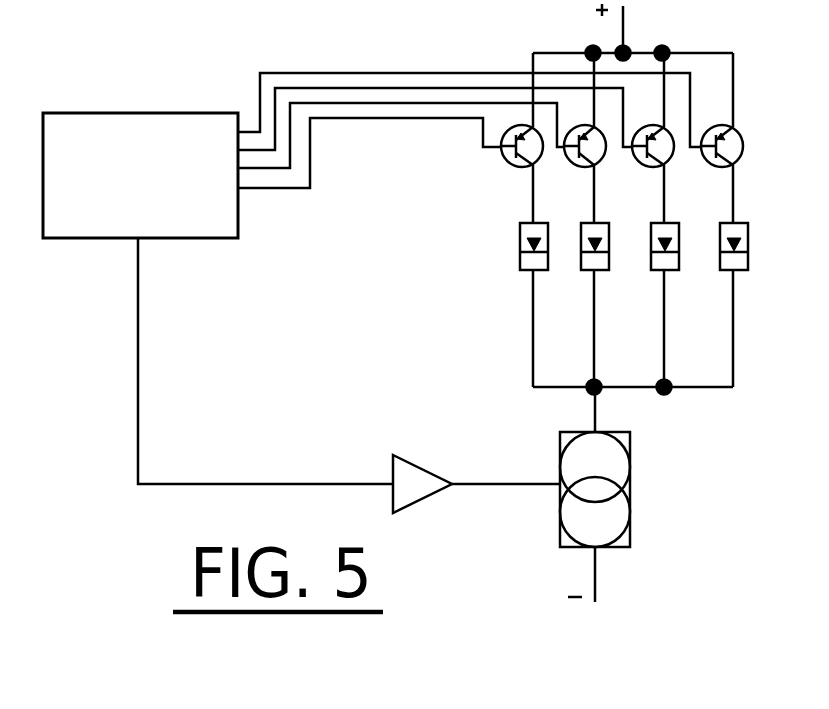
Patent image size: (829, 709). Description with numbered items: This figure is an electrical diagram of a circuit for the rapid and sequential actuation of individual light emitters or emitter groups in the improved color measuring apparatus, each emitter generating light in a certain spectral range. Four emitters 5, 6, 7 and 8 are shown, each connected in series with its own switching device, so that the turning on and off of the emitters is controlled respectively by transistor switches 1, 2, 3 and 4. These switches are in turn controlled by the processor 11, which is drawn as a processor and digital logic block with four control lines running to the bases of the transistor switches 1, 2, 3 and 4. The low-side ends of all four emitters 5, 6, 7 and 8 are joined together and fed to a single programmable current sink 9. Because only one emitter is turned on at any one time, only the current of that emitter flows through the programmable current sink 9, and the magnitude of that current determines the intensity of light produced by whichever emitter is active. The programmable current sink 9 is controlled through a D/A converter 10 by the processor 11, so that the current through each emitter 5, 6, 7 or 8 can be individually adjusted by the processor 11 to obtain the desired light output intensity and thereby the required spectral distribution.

The transistor switch 1 is at (510, 165).
The transistor switch 2 is at (572, 165).
The transistor switch 3 is at (642, 165).
The transistor switch 4 is at (710, 165).
The emitter 5 is at (521, 272).
The emitter 6 is at (590, 272).
The emitter 7 is at (660, 272).
The emitter 8 is at (728, 271).
The programmable current sink 9 is at (632, 445).
The D/A converter 10 is at (414, 465).
The processor 11 is at (172, 113).